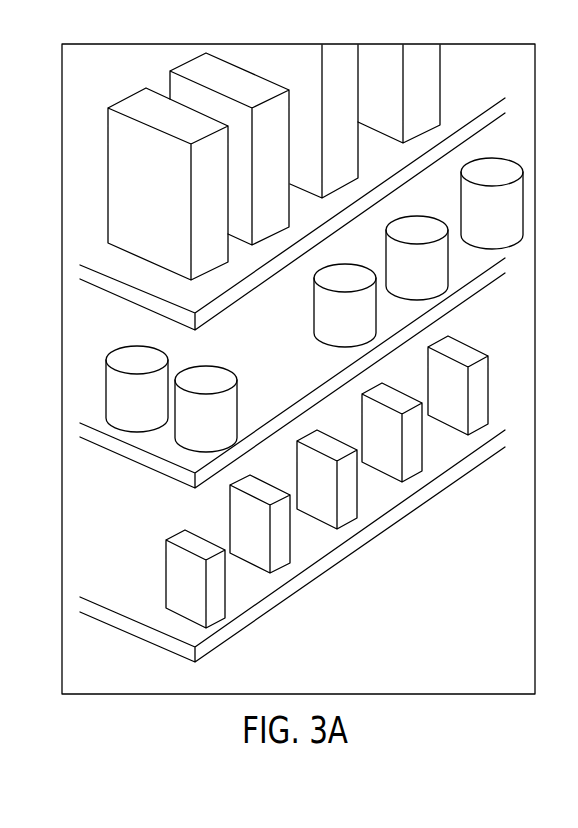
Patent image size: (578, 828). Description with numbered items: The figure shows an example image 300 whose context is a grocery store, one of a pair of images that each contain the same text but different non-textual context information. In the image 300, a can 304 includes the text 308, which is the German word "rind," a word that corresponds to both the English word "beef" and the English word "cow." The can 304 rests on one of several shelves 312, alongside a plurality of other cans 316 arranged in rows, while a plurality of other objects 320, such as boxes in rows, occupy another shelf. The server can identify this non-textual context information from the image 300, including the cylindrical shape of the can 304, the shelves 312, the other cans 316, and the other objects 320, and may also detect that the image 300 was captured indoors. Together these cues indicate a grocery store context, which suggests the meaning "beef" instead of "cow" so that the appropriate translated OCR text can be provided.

The image 300 is at (373, 44).
The can 304 is at (185, 445).
The text 308 is at (212, 427).
The shelves 312 is at (475, 125).
The plurality of other cans 316 is at (508, 232).
The plurality of other objects 320 is at (480, 422).